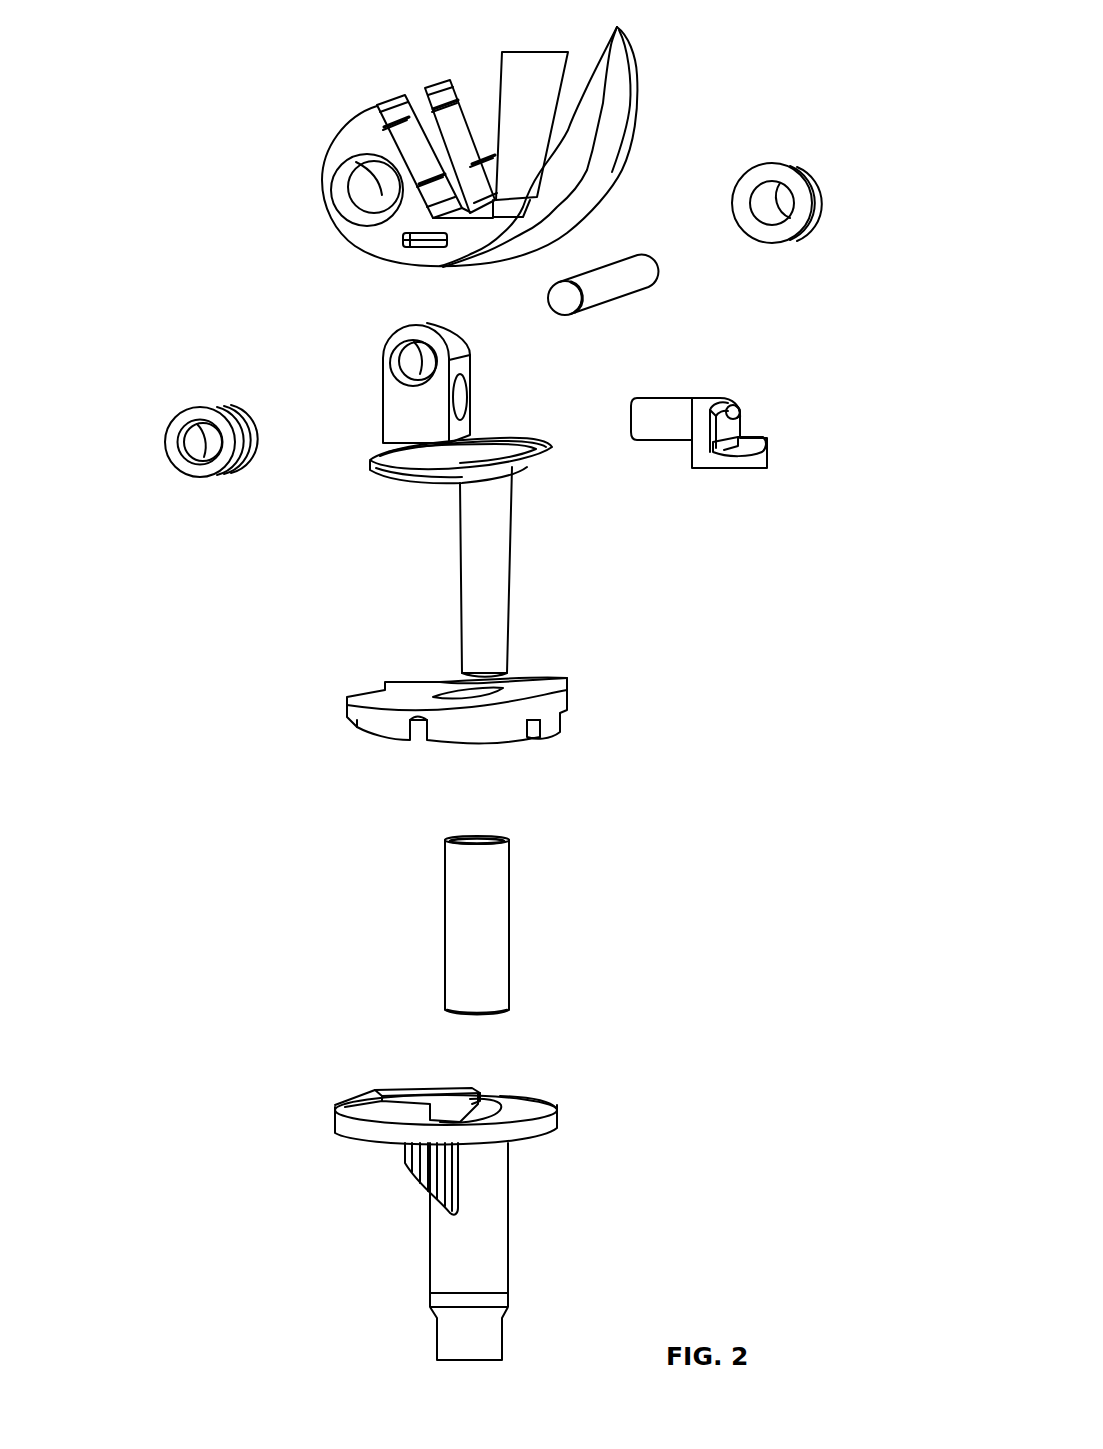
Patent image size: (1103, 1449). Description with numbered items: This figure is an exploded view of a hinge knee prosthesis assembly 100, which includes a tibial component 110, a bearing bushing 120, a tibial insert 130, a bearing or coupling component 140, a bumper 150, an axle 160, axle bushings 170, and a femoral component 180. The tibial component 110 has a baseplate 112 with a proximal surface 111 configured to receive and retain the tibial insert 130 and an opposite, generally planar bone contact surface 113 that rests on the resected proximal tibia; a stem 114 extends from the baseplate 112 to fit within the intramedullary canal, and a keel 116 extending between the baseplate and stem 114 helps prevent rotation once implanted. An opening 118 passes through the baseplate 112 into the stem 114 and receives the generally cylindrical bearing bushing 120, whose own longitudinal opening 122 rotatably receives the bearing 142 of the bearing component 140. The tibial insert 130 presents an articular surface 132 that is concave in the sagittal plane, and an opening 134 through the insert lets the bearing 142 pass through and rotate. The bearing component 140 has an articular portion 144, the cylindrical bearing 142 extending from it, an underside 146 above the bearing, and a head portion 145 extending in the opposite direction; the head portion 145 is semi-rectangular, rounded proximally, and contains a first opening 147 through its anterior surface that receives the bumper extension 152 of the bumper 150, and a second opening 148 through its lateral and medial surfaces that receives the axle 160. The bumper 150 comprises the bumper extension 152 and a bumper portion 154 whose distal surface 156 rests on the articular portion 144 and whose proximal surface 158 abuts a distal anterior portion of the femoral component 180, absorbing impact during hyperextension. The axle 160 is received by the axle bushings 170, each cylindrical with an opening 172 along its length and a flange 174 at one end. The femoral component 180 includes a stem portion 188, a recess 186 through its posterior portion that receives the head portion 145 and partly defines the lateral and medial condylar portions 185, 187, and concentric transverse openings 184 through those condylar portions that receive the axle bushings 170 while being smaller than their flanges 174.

The hinge knee prosthesis assembly 100 is at (142, 36).
The tibial component 110 is at (390, 1282).
The proximal surface 111 is at (347, 1102).
The baseplate 112 is at (550, 1122).
The bone contact surface 113 is at (370, 1143).
The stem 114 is at (497, 1250).
The keel 116 is at (413, 1177).
The opening 118 is at (490, 1100).
The bearing bushing 120 is at (393, 934).
The opening 122 is at (477, 838).
The tibial insert 130 is at (303, 710).
The articular surface 132 is at (527, 687).
The opening 134 is at (440, 687).
The bearing component 140 is at (340, 598).
The bearing 142 is at (497, 547).
The articular portion 144 is at (377, 468).
The head portion 145 is at (420, 328).
The platform underside 146 is at (407, 480).
The first opening 147 is at (462, 392).
The second opening 148 is at (420, 360).
The bumper 150 is at (760, 346).
The bumper extension 152 is at (670, 397).
The bumper portion 154 is at (760, 460).
The distal surface 156 is at (725, 470).
The proximal surface 158 is at (752, 438).
The axle 160 is at (638, 226).
The axle bushings 170 is at (820, 142).
The opening 172 is at (203, 442).
The flange 174 is at (217, 400).
The femoral component 180 is at (310, 76).
The transverse openings 184 is at (367, 187).
The lateral condylar portion 185 is at (332, 137).
The recess 186 is at (405, 100).
The medial condylar portion 187 is at (417, 98).
The stem portion 188 is at (543, 63).